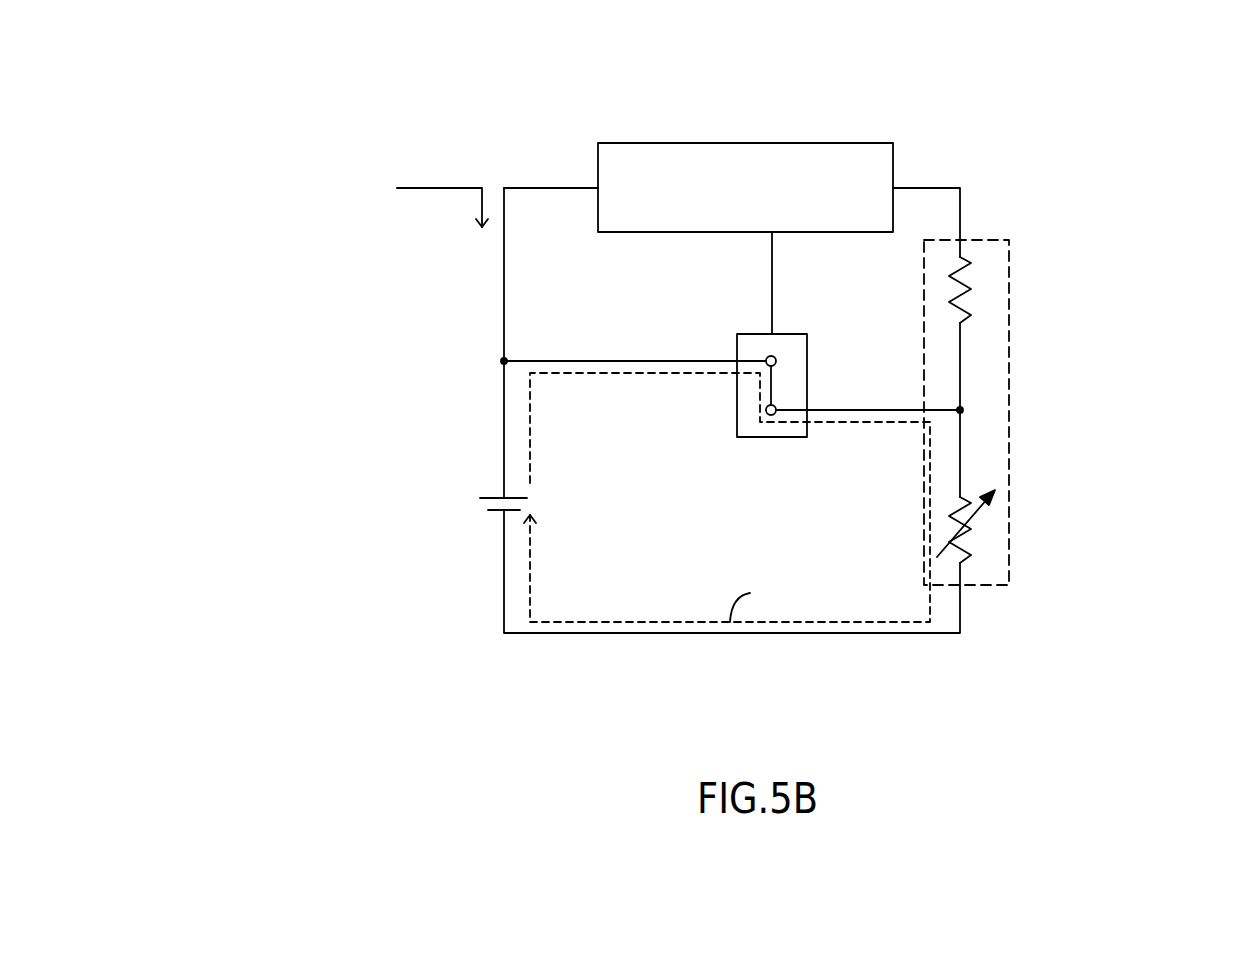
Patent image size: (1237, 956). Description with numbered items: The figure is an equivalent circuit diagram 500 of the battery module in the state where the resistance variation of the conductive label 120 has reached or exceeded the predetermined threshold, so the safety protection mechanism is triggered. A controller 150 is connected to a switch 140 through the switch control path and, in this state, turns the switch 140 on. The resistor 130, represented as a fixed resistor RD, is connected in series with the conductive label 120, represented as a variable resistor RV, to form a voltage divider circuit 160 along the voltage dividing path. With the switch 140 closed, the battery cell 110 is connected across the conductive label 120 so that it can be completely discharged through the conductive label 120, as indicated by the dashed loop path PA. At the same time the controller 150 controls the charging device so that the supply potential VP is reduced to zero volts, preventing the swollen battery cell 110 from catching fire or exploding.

The circuit 500 is at (263, 88).
The controller 150 is at (623, 143).
The switch 140 is at (771, 437).
The battery cell 110 is at (488, 504).
The voltage divider circuit 160 is at (1000, 240).
The resistor 130 is at (955, 288).
The conductive label 120 is at (963, 546).